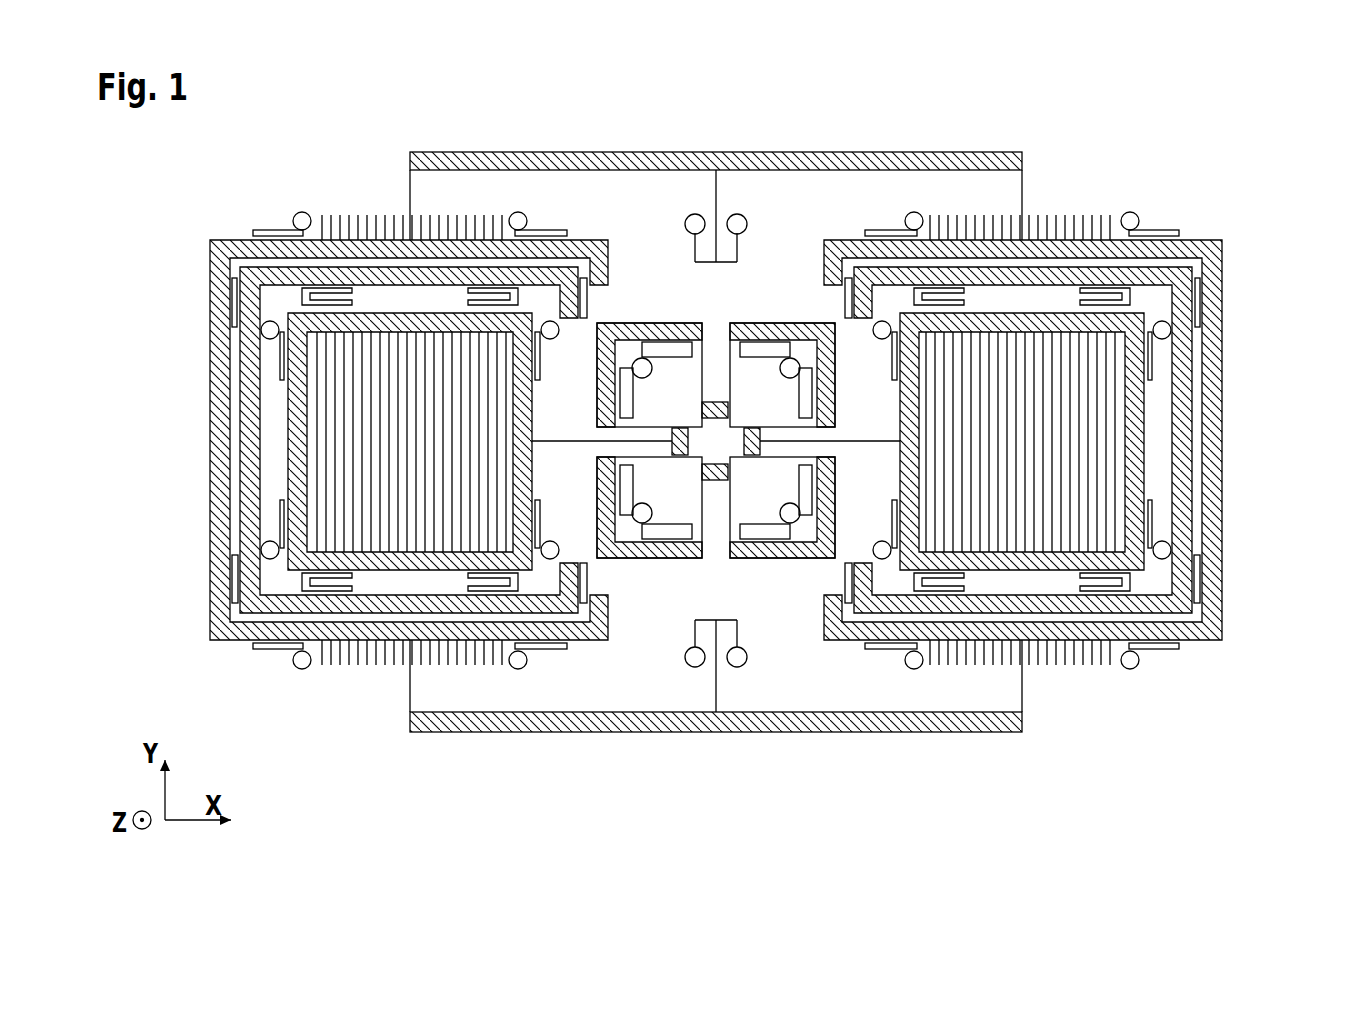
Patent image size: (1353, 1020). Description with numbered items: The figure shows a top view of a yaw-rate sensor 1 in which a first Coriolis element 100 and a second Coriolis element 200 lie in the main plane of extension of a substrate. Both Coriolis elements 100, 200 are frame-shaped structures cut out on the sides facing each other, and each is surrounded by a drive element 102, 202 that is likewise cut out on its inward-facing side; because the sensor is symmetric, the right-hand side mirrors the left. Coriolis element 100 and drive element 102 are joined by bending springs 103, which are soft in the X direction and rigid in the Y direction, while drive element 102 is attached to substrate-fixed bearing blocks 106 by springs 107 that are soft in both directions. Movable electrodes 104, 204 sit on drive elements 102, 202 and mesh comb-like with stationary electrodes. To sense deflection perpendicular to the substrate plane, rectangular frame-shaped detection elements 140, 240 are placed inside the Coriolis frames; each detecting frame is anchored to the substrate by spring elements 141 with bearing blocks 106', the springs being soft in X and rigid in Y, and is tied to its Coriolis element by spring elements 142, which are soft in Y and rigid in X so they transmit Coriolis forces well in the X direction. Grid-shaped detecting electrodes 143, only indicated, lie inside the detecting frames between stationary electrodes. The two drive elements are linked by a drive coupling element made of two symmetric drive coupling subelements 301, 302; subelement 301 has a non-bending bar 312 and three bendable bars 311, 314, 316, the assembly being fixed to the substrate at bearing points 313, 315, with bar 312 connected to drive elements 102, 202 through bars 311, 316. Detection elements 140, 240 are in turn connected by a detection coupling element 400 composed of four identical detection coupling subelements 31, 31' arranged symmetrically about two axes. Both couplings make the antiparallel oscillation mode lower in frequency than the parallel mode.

The yaw-rate sensor 1 is at (290, 114).
The detection coupling subelement 31 is at (649, 473).
The detection coupling subelement 31' is at (782, 473).
The first Coriolis element 100 is at (250, 400).
The drive element 102 is at (218, 266).
The bending springs 103 is at (232, 307).
The movable electrodes 104 is at (355, 222).
The bearing blocks 106 is at (301, 192).
The bearing blocks 106' is at (204, 554).
The springs 107 is at (265, 230).
The detection element 140 is at (300, 443).
The spring elements 141 is at (280, 513).
The spring elements 142 is at (322, 587).
The grid-shaped detecting electrodes 143 is at (398, 527).
The second Coriolis element 200 is at (1183, 400).
The drive element 202 is at (1215, 265).
The movable electrodes 204 is at (1077, 218).
The detection element 240 is at (1137, 443).
The drive coupling subelement 301 is at (612, 138).
The drive coupling subelement 302 is at (651, 743).
The bendable bar 311 is at (410, 185).
The non-bending bar 312 is at (470, 150).
The bearing point 313 is at (690, 217).
The bendable bar 314 is at (718, 196).
The bearing point 315 is at (742, 218).
The bendable bar 316 is at (1023, 188).
The detection coupling element 400 is at (795, 580).